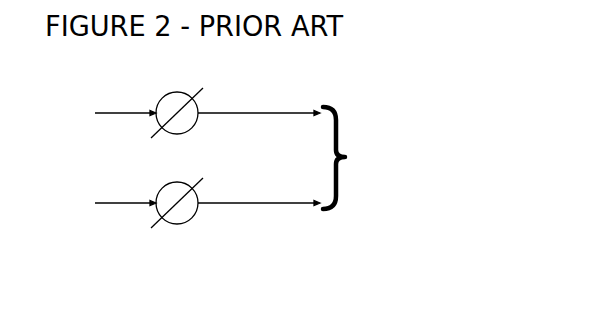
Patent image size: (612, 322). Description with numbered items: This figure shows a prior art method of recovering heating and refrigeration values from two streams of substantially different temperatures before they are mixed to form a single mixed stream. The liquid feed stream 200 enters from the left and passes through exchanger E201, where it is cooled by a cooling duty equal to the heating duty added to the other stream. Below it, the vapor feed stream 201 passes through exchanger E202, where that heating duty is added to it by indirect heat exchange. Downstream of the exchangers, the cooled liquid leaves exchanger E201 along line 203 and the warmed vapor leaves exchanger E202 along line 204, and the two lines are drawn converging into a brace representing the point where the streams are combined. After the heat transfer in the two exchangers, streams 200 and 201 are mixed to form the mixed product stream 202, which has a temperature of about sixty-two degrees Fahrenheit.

The liquid feed stream 200 is at (100, 114).
The vapor feed stream 201 is at (100, 203).
The exchanger E201 is at (177, 97).
The exchanger E202 is at (180, 219).
The first output line 203 is at (259, 100).
The second output line 204 is at (259, 190).
The mixed product stream 202 is at (360, 158).